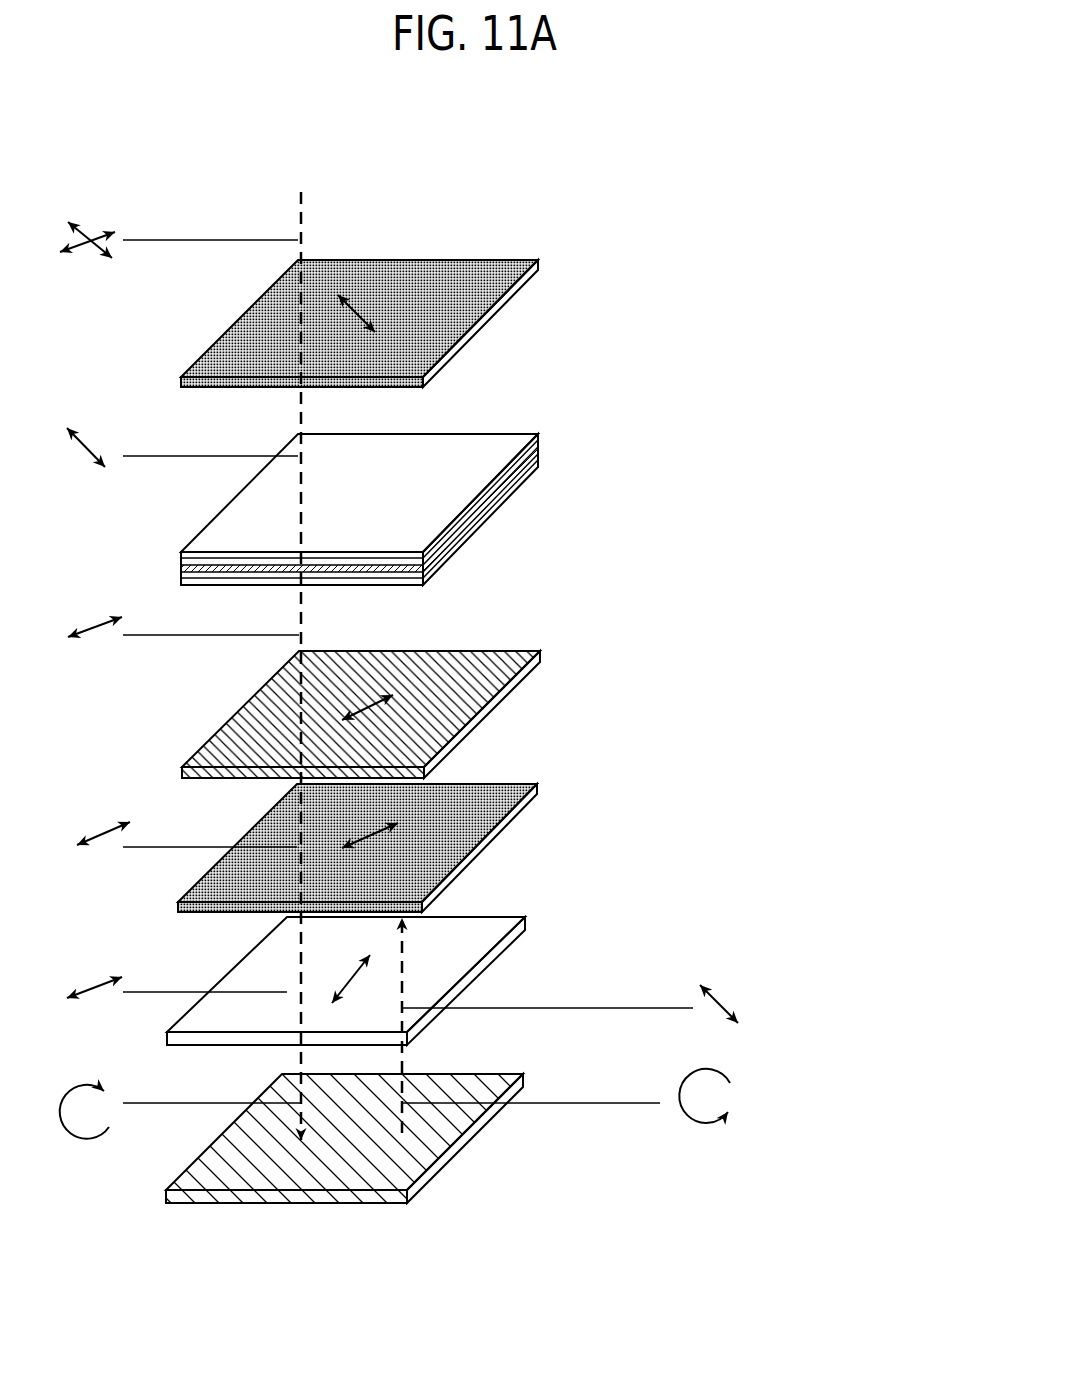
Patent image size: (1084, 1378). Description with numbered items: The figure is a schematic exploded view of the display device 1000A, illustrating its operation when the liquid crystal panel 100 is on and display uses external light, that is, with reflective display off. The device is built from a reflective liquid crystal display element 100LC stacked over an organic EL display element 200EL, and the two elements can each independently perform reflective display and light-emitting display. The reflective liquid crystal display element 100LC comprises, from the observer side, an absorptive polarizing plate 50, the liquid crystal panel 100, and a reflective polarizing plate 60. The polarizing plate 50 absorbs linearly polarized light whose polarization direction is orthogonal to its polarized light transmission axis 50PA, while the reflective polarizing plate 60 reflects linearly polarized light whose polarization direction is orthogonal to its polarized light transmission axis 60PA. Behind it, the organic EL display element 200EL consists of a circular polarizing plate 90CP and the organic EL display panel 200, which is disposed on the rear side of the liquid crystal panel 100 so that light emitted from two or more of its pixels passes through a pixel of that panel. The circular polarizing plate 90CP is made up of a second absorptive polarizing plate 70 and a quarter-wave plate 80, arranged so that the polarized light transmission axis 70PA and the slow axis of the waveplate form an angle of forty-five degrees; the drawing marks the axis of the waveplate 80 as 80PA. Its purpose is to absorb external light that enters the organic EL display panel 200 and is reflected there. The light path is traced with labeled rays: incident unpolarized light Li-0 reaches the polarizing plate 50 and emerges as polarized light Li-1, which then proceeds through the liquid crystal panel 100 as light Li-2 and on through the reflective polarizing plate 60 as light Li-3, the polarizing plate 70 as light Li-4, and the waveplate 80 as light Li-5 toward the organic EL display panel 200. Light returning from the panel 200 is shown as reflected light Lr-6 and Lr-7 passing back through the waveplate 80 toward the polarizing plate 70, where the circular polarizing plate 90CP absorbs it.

The display device 1000A is at (500, 654).
The reflective liquid crystal display element 100LC is at (785, 218).
The organic EL display element 200EL is at (818, 777).
The circular polarizing plate 90CP is at (658, 777).
The polarizing plate 50 is at (485, 325).
The polarized light transmission axis 50PA is at (357, 313).
The liquid crystal panel 100 is at (497, 507).
The reflective polarizing plate 60 is at (480, 722).
The polarized light transmission axis 60PA is at (357, 712).
The polarizing plate 70 is at (478, 857).
The polarized light transmission axis 70PA is at (345, 848).
The waveplate 80 is at (467, 990).
The optical axis of retardation layer 80PA is at (350, 980).
The organic EL display panel 200 is at (450, 1159).
The incident unpolarized light Li-0 is at (179, 226).
The polarized light Li-1 is at (182, 444).
The light after liquid crystal cell Li-2 is at (183, 610).
The light after second polarizer Li-3 is at (187, 818).
The light after third polarizer Li-4 is at (177, 969).
The circularly polarized light after retardation layer Li-5 is at (180, 1098).
The reflected circularly polarized light Lr-6 is at (591, 1086).
The reflected light after retardation layer Lr-7 is at (583, 995).